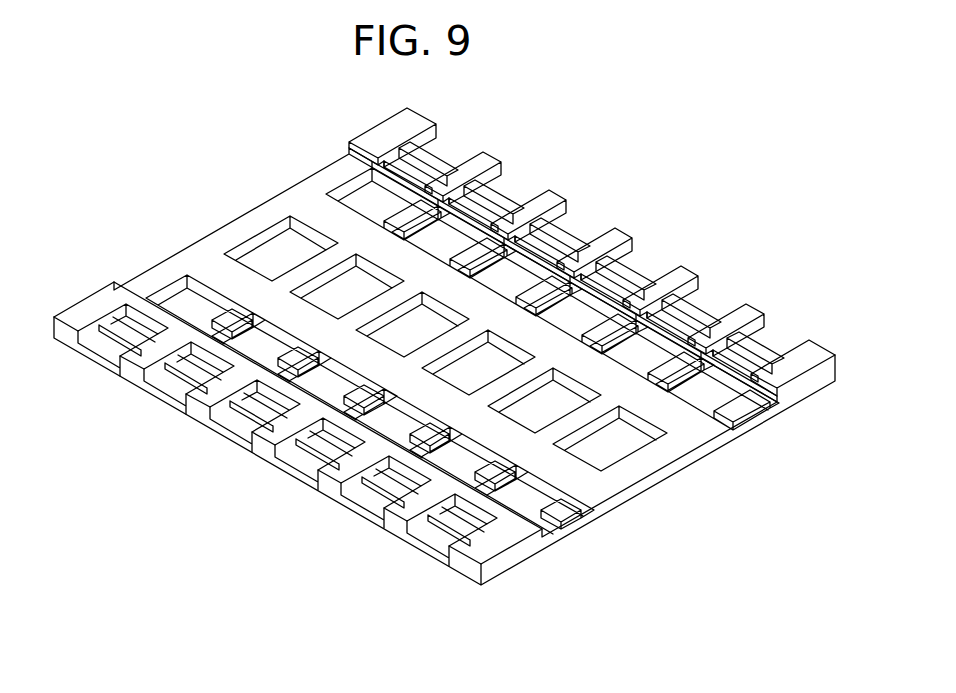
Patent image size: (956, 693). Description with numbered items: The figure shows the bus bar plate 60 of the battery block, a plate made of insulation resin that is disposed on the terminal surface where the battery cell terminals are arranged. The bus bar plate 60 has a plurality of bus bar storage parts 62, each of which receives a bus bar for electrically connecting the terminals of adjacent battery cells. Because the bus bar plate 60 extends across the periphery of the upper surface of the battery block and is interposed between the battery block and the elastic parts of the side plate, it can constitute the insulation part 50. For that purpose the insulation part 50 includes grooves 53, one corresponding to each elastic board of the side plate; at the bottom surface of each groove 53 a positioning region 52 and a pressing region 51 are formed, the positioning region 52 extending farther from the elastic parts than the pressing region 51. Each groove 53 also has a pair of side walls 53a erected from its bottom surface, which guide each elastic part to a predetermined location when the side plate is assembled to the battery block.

The bus bar plate 60 is at (732, 521).
The bus bar storage part 62 is at (702, 338).
The groove 53 is at (587, 197).
The side wall 53a is at (562, 212).
The insulation part 50 is at (298, 423).
The pressing region 51 is at (250, 402).
The positioning region 52 is at (243, 427).